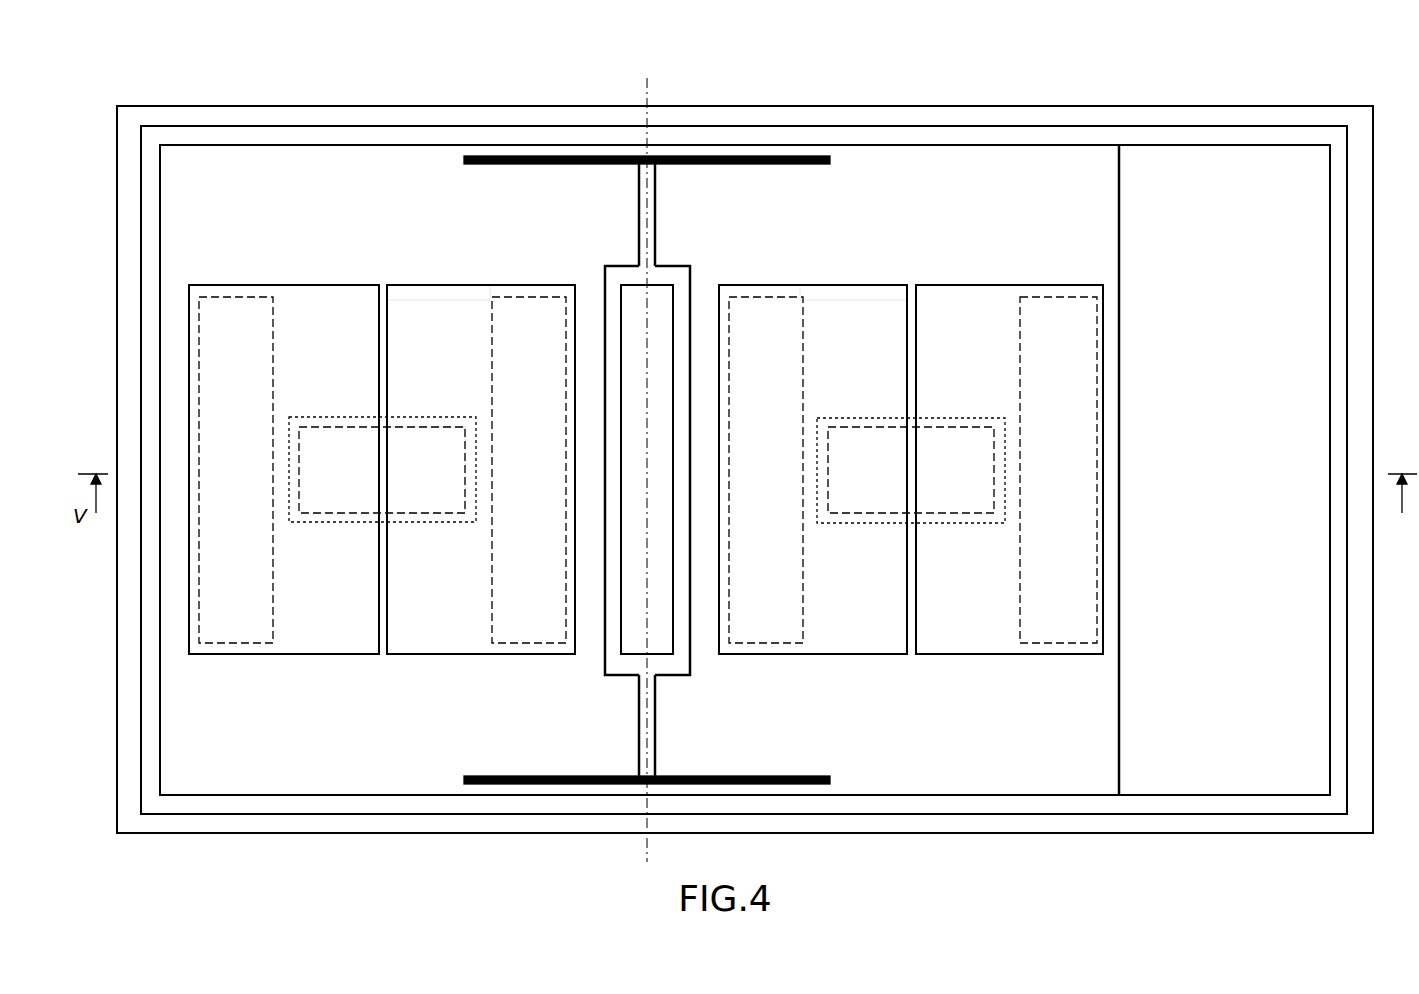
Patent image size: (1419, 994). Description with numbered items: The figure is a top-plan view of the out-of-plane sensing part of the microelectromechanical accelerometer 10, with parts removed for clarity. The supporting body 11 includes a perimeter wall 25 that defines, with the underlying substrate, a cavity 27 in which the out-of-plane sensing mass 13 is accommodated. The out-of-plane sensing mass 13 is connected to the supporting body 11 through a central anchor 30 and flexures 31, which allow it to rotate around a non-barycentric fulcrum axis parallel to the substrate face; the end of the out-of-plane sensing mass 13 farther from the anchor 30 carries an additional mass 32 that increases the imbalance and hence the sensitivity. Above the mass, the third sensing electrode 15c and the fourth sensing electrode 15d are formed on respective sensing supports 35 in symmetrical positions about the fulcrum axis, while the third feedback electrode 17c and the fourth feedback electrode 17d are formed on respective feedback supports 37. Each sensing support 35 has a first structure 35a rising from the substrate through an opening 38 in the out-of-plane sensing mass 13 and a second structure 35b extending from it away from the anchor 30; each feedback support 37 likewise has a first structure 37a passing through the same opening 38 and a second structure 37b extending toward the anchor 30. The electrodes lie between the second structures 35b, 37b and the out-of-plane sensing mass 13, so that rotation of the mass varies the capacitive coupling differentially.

The accelerometer 10 is at (1243, 91).
The supporting body 11 is at (578, 104).
The out-of-plane sensing mass 13 is at (948, 172).
The perimeter wall 25 is at (328, 108).
The cavity 27 is at (1163, 135).
The anchor 30 is at (660, 637).
The flexures 31 is at (652, 212).
The additional mass 32 is at (1205, 783).
The sensing supports 35 is at (318, 273).
The first structures of the sensing supports 35a is at (340, 500).
The second structures of the sensing supports 35b is at (320, 635).
The feedback supports 37 is at (470, 659).
The first structures of the feedback supports 37a is at (430, 452).
The second structures of the feedback supports 37b is at (470, 322).
The openings 38 is at (345, 429).
The third sensing electrode 15c is at (230, 318).
The fourth sensing electrode 15d is at (1075, 318).
The third feedback electrode 17c is at (525, 640).
The fourth feedback electrode 17d is at (773, 640).